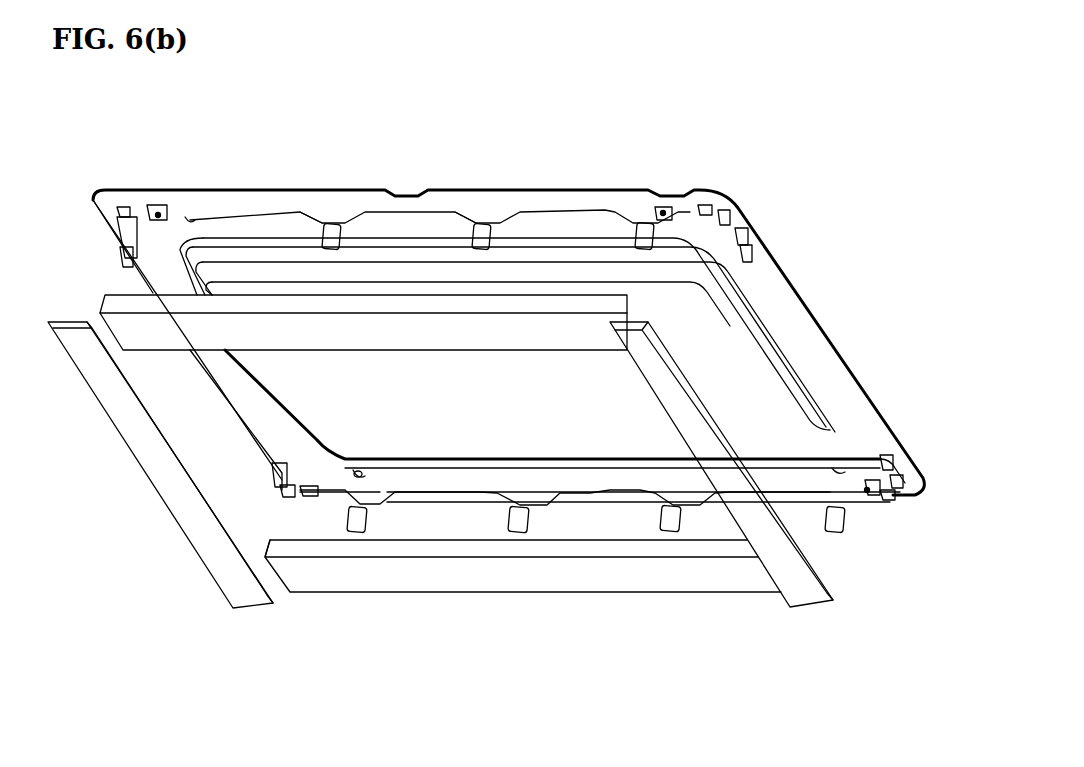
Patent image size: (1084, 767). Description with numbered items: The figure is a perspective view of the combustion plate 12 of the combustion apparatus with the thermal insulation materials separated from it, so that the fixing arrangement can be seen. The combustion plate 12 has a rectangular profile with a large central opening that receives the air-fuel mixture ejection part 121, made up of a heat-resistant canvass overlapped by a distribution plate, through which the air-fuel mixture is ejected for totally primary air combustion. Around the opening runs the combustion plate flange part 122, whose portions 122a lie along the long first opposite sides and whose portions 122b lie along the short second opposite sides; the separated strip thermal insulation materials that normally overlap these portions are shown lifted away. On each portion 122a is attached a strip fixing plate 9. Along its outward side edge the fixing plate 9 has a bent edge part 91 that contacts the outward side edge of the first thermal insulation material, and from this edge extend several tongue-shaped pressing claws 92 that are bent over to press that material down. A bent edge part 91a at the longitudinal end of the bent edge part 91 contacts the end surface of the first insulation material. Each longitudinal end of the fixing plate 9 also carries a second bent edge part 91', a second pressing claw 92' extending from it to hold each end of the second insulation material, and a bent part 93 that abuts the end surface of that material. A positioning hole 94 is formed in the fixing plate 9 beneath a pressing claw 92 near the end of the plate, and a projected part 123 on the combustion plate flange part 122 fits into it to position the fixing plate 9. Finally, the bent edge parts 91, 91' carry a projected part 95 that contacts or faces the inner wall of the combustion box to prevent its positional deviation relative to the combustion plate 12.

The combustion plate 12 is at (813, 305).
The combustion plate flange part 122 is at (457, 197).
The flange portion along the first opposite sides 122a is at (577, 500).
The flange portion along the second opposite sides 122b is at (240, 398).
The air-fuel mixture ejection part 121 is at (483, 430).
The projected part 123 is at (183, 270).
The fixing plate 9 is at (407, 227).
The bent edge part 91 is at (388, 183).
The bent edge part 91a is at (140, 207).
The second bent edge part 91' is at (499, 372).
The pressing claw 92 is at (592, 367).
The second pressing claw 92' is at (483, 421).
The bent part 93 is at (118, 208).
The positioning hole 94 is at (190, 220).
The projected part 95 is at (158, 215).